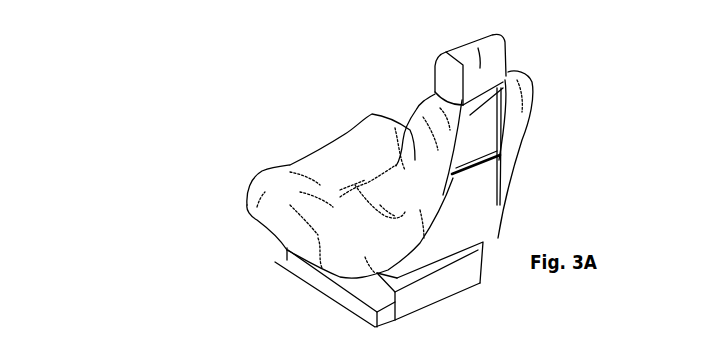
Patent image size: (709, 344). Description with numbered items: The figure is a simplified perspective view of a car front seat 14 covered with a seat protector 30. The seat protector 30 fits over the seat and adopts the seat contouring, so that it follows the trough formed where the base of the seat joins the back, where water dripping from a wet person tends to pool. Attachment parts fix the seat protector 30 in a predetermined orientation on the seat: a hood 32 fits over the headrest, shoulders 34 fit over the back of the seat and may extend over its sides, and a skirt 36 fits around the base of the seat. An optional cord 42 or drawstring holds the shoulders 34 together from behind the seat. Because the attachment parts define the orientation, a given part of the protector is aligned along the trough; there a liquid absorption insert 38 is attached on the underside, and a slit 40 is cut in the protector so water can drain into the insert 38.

The front seat 14 is at (535, 135).
The seat protector 30 is at (283, 150).
The hood 32 is at (455, 64).
The shoulders 34 is at (433, 110).
The skirt 36 is at (302, 202).
The liquid absorption insert 38 is at (362, 200).
The slit 40 is at (388, 208).
The cord 42 is at (500, 165).